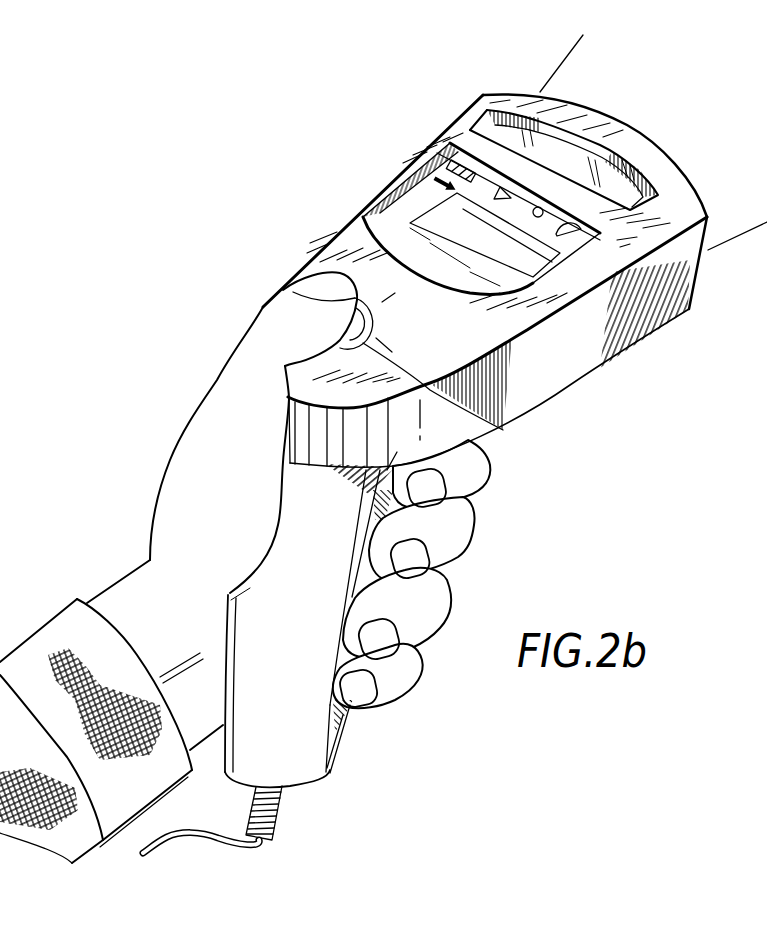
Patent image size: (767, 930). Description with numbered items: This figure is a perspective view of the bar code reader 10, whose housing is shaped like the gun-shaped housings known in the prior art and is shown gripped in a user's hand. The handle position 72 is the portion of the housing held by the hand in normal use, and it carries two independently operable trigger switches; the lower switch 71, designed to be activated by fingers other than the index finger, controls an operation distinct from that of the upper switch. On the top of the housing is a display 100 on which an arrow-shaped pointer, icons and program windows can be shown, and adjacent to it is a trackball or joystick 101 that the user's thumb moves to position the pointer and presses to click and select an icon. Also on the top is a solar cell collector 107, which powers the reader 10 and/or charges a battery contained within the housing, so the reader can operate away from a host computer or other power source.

The bar code reader 10 is at (587, 347).
The display 100 is at (380, 194).
The joystick 101 is at (502, 427).
The solar cell collector 107 is at (483, 125).
The lower switch 71 is at (383, 507).
The handle position 72 is at (370, 590).